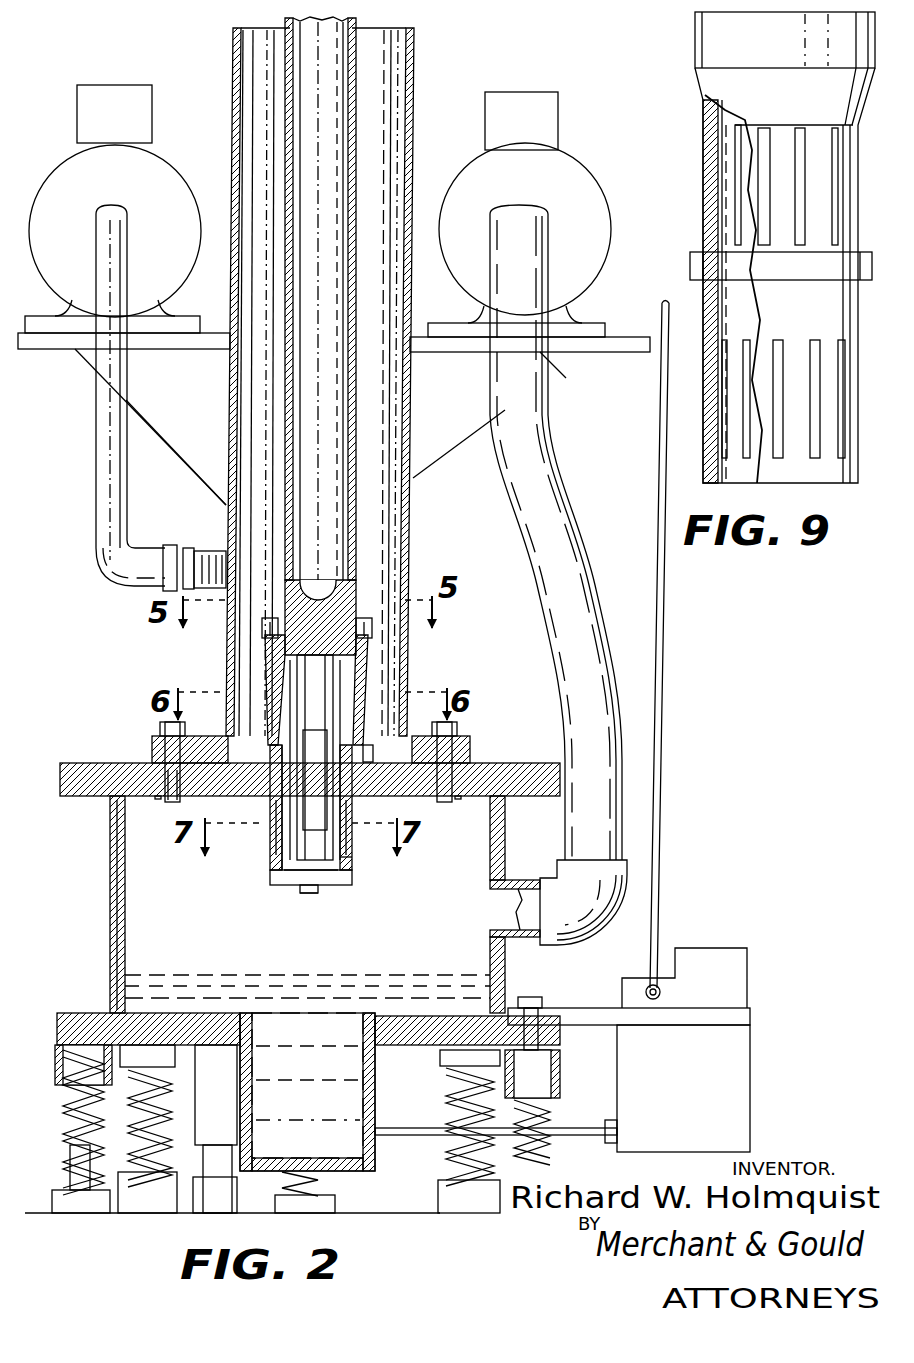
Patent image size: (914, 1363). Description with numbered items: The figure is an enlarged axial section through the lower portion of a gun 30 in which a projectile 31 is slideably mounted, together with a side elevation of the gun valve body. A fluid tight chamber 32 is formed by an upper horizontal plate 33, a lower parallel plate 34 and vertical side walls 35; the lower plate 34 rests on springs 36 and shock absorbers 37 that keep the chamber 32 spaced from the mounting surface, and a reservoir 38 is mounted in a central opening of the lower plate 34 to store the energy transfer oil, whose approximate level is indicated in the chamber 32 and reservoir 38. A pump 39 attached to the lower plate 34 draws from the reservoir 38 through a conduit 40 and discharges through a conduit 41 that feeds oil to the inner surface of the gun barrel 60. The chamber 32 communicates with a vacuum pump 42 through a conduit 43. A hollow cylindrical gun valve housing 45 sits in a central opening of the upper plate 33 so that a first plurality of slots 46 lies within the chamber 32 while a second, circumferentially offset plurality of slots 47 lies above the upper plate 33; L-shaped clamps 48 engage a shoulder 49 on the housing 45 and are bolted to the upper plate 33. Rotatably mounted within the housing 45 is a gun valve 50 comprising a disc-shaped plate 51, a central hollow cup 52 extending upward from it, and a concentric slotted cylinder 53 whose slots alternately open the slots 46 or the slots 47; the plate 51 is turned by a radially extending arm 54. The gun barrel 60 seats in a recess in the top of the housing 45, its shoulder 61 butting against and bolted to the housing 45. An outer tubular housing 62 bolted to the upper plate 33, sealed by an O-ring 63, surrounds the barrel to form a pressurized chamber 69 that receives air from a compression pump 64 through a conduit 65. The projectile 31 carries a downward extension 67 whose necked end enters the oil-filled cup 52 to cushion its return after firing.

In FIG. 2, the gun 30 is at (230, 58).
In FIG. 2, the projectile 31 is at (306, 578).
In FIG. 2, the fluid tight chamber 32 is at (148, 884).
In FIG. 2, the upper horizontal plate 33 is at (70, 768).
In FIG. 2, the lower parallel plate 34 is at (70, 1020).
In FIG. 2, the vertical side walls 35 is at (118, 935).
In FIG. 2, the springs 36 is at (80, 1112).
In FIG. 2, the shock absorbers 37 is at (228, 1092).
In FIG. 2, the reservoir 38 is at (335, 1158).
In FIG. 2, the pump 39 is at (738, 998).
In FIG. 2, the conduit 40 is at (414, 1126).
In FIG. 2, the conduit 41 is at (658, 836).
In FIG. 2, the vacuum pump 42 is at (594, 198).
In FIG. 2, the conduit 43 is at (566, 538).
In FIG. 2, the gun valve housing 45 is at (272, 862).
In FIG. 9, the gun valve housing 45 is at (706, 84).
In FIG. 2, the slots 46 is at (272, 842).
In FIG. 9, the slots 46 is at (815, 450).
In FIG. 9, the slots 47 is at (826, 138).
In FIG. 2, the L-shaped clamps 48 is at (364, 744).
In FIG. 2, the shoulder 49 is at (311, 752).
In FIG. 9, the shoulder 49 is at (690, 260).
In FIG. 2, the gun valve 50 is at (272, 887).
In FIG. 2, the disc-shaped plate 51 is at (291, 880).
In FIG. 2, the cup 52 is at (310, 860).
In FIG. 2, the cylinder 53 is at (338, 858).
In FIG. 2, the radially extending arm 54 is at (312, 895).
In FIG. 2, the gun barrel 60 is at (352, 452).
In FIG. 2, the shoulder 61 is at (355, 650).
In FIG. 2, the tubular housing 62 is at (414, 92).
In FIG. 2, the O-ring 63 is at (210, 780).
In FIG. 2, the compression pump 64 is at (63, 166).
In FIG. 2, the conduit 65 is at (104, 455).
In FIG. 2, the extension 67 is at (318, 688).
In FIG. 2, the pressurized chamber 69 is at (390, 120).